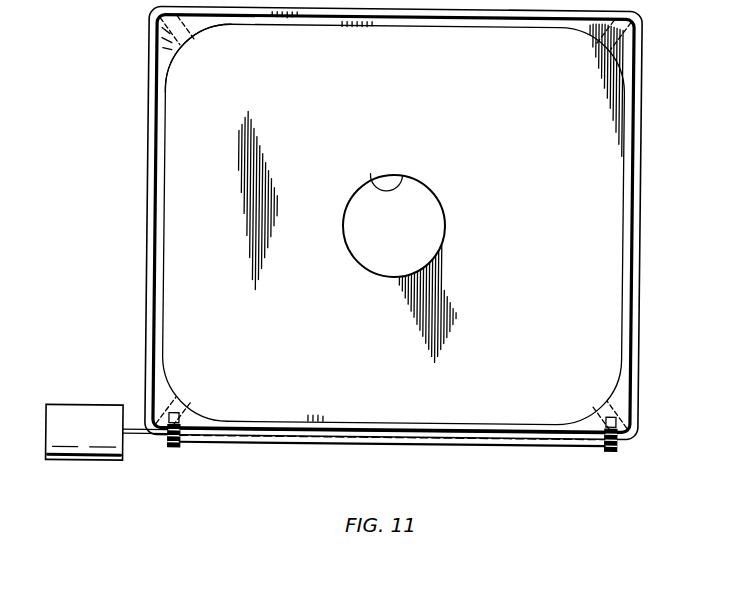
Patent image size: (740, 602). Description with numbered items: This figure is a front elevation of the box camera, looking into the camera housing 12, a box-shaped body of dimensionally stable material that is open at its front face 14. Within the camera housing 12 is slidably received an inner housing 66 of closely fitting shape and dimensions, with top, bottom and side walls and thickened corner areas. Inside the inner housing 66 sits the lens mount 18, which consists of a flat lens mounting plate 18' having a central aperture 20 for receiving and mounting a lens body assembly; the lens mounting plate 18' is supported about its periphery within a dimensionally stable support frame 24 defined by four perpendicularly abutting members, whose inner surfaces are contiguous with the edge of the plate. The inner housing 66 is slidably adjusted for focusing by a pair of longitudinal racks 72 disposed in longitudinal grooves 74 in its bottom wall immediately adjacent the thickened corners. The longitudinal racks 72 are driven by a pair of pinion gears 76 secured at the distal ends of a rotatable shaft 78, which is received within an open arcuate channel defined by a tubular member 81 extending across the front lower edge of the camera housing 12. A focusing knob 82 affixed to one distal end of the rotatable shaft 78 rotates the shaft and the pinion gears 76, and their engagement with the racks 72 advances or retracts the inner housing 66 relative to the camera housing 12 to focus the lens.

The camera housing 12 is at (638, 73).
The front face 14 is at (627, 112).
The lens mount 18 is at (390, 157).
The lens mounting plate 18' is at (393, 225).
The aperture 20 is at (397, 172).
The support frame 24 is at (162, 20).
The inner housing 66 is at (457, 30).
The longitudinal racks 72 is at (170, 412).
The longitudinal grooves 74 is at (181, 418).
The pinion gears 76 is at (176, 452).
The rotatable shaft 78 is at (448, 449).
The tubular member 81 is at (303, 447).
The focusing knob 82 is at (73, 406).